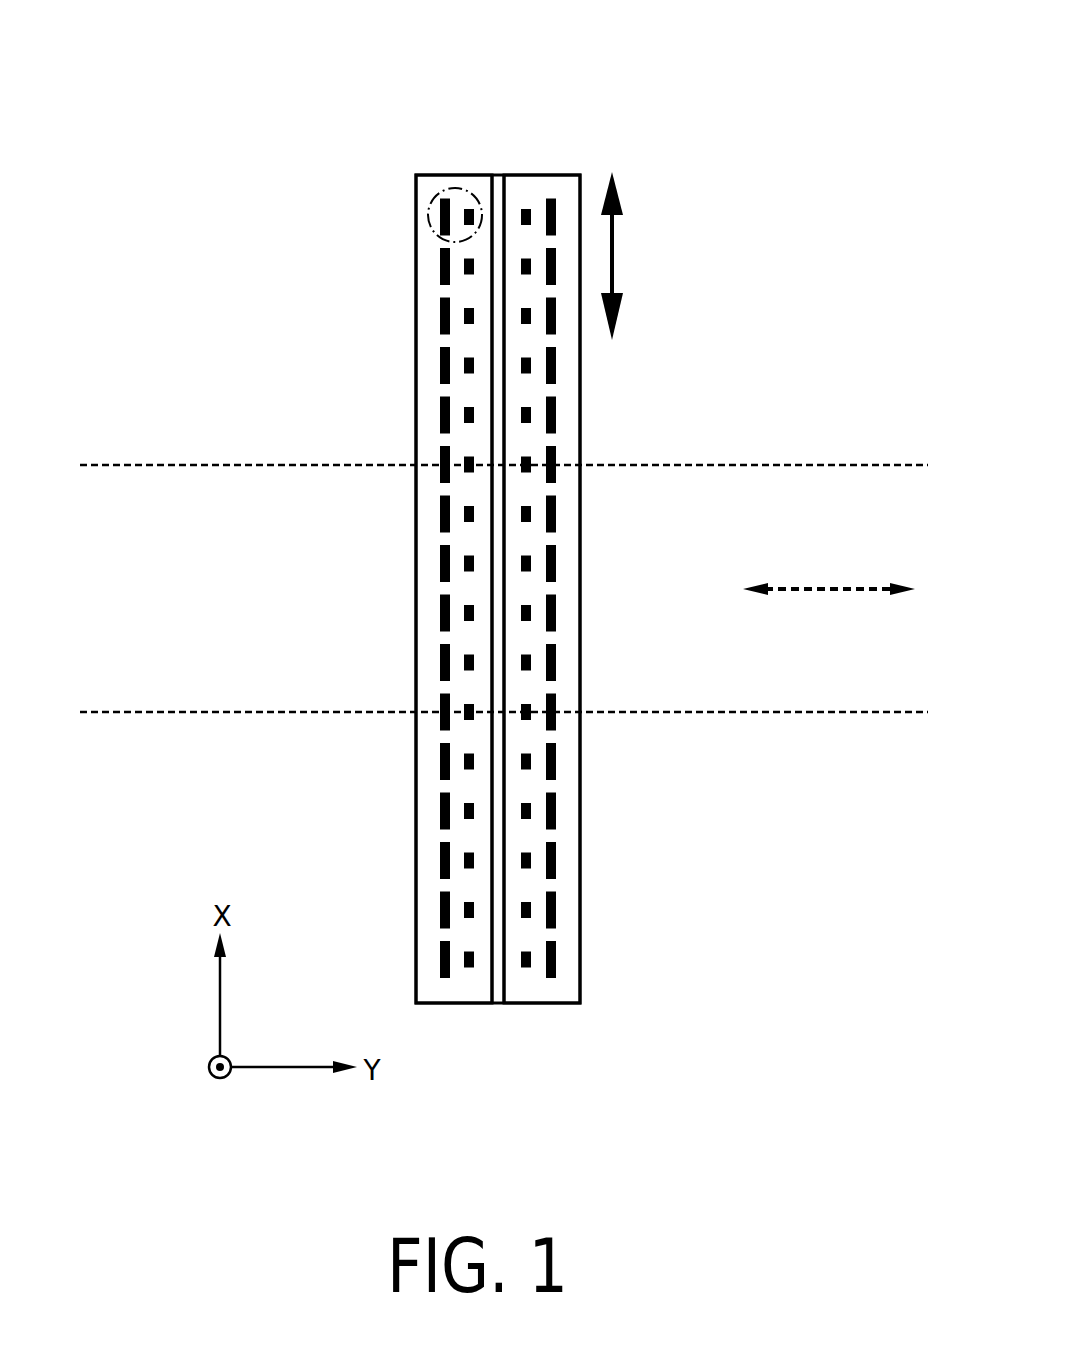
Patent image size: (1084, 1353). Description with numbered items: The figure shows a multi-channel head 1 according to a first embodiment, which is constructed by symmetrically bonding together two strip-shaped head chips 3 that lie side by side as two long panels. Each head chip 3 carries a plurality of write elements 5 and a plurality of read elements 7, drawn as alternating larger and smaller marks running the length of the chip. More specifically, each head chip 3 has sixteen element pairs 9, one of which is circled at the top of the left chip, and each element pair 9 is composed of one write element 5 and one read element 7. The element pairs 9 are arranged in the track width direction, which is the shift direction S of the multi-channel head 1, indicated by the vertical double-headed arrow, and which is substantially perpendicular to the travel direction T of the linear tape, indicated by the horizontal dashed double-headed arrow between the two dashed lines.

The multi-channel head 1 is at (316, 33).
The head chip 3 is at (467, 1003).
The write element 5 is at (439, 218).
The read element 7 is at (468, 210).
The element pair 9 is at (431, 203).
The shift direction S is at (612, 247).
The travel direction T is at (840, 592).